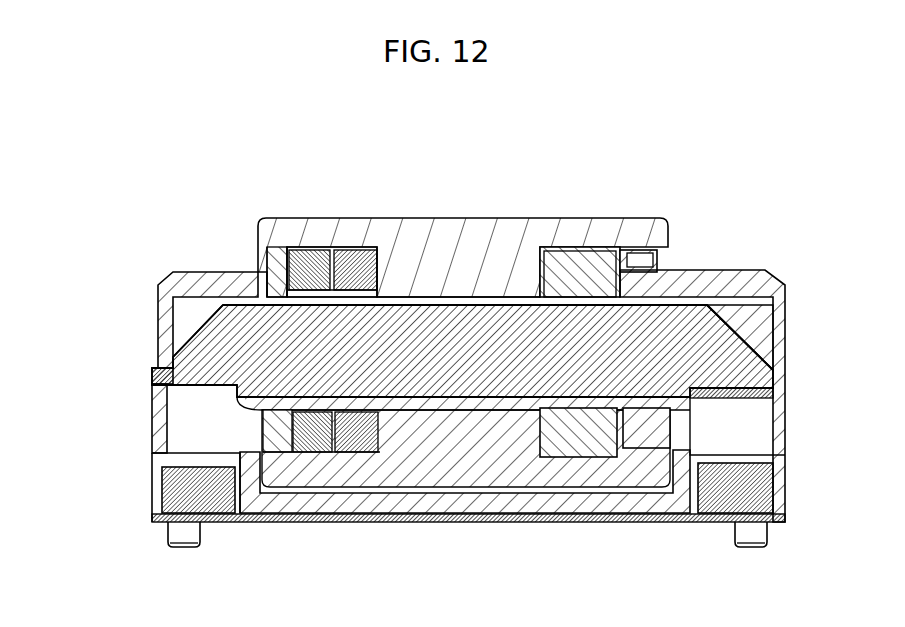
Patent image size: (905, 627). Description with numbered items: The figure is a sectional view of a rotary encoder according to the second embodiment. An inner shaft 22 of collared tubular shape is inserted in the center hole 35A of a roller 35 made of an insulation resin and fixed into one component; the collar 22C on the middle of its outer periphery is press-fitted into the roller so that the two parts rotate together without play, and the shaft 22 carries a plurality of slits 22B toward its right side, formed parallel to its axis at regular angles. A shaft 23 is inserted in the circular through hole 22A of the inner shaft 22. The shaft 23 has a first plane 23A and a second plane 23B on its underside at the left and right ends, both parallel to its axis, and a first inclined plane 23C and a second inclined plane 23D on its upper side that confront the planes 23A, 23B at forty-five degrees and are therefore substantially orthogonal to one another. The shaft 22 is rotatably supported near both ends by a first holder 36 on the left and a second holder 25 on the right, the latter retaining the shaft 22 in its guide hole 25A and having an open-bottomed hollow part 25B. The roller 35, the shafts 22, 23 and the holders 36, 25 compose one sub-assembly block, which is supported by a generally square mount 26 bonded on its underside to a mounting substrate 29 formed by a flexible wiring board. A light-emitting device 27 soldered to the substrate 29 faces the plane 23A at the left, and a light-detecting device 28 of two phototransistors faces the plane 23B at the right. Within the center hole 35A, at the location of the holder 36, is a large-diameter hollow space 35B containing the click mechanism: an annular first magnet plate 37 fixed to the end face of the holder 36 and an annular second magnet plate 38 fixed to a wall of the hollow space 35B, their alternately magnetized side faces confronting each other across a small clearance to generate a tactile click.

The inner shaft 22 is at (503, 300).
The through hole 22A is at (597, 300).
The slits 22B is at (763, 352).
The collar 22C is at (568, 275).
The shaft 23 is at (670, 318).
The first plane 23A is at (167, 388).
The second plane 23B is at (773, 400).
The first inclined plane 23C is at (208, 323).
The second inclined plane 23D is at (727, 325).
The second holder 25 is at (743, 285).
The guide hole 25A is at (640, 410).
The hollow part 25B is at (750, 435).
The mount 26 is at (470, 502).
The light-emitting device 27 is at (175, 498).
The light-detecting device 28 is at (767, 493).
The mounting substrate 29 is at (397, 522).
The roller 35 is at (417, 246).
The center hole 35A is at (452, 283).
The hollow space 35B is at (347, 243).
The first holder 36 is at (211, 282).
The first magnet plate 37 is at (288, 250).
The second magnet plate 38 is at (327, 247).